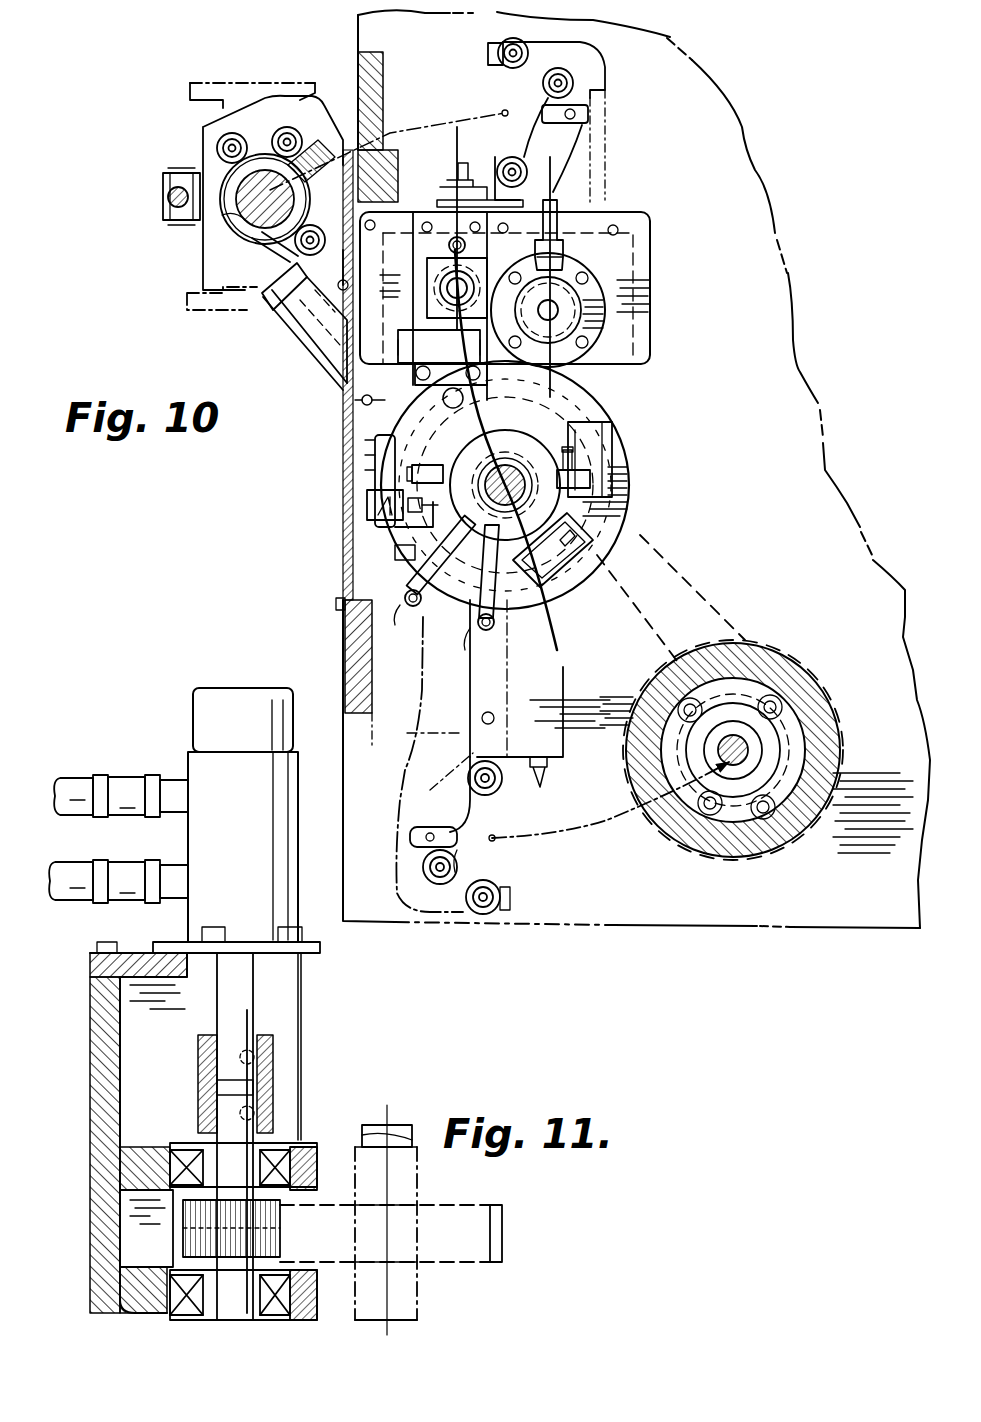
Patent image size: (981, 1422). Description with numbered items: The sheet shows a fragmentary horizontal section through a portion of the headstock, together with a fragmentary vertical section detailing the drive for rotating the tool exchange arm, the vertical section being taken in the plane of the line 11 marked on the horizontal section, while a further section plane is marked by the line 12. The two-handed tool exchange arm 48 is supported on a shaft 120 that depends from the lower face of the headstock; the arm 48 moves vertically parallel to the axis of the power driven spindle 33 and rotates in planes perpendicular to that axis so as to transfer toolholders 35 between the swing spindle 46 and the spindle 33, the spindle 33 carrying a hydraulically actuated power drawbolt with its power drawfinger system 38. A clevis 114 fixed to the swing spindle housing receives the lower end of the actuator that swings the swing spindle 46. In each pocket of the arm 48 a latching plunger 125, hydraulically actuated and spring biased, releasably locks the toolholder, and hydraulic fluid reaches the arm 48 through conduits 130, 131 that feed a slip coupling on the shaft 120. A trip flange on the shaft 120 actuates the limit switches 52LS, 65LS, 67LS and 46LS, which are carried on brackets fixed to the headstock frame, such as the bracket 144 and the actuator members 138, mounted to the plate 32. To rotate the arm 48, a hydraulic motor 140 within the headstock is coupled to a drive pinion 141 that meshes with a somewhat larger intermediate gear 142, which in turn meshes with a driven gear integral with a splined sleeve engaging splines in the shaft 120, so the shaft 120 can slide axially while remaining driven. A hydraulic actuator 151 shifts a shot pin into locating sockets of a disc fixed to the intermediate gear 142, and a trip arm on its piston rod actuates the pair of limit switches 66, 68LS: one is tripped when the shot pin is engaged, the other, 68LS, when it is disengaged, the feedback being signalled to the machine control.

In FIG. 10, the support plate / housing 32 is at (340, 652).
In FIG. 11, the support plate / housing 32 is at (87, 992).
In FIG. 10, the spindle 33 is at (827, 688).
In FIG. 10, the toolholder 35 is at (270, 192).
In FIG. 10, the power drawfinger system 38 is at (737, 775).
In FIG. 10, the swing spindle 46 is at (193, 107).
In FIG. 10, the tool exchange arm 48 is at (472, 930).
In FIG. 10, the clevis 114 is at (160, 190).
In FIG. 10, the latching plunger 125 is at (267, 285).
In FIG. 10, the section line 12 is at (506, 135).
In FIG. 10, the section line 11 is at (590, 167).
In FIG. 10, the hydraulic actuator 151 is at (400, 290).
In FIG. 10, the motor 140 is at (530, 375).
In FIG. 11, the motor 140 is at (187, 760).
In FIG. 10, the drive pinion 141 is at (600, 292).
In FIG. 11, the drive pinion 141 is at (280, 1236).
In FIG. 10, the intermediate gear 142 is at (355, 403).
In FIG. 11, the intermediate gear 142 is at (502, 1237).
In FIG. 10, the switch block 66 is at (400, 343).
In FIG. 10, the limit switch 68LS is at (354, 359).
In FIG. 10, the driven gear 144 is at (365, 437).
In FIG. 10, the switch actuator 138 is at (353, 470).
In FIG. 10, the limit switch 67LS is at (367, 513).
In FIG. 10, the limit switch 46LS is at (357, 560).
In FIG. 10, the shaft 120 is at (610, 407).
In FIG. 10, the limit switch 65LS is at (633, 433).
In FIG. 10, the limit switch 52LS is at (623, 523).
In FIG. 10, the conduit 130 is at (440, 600).
In FIG. 10, the conduit 131 is at (478, 635).